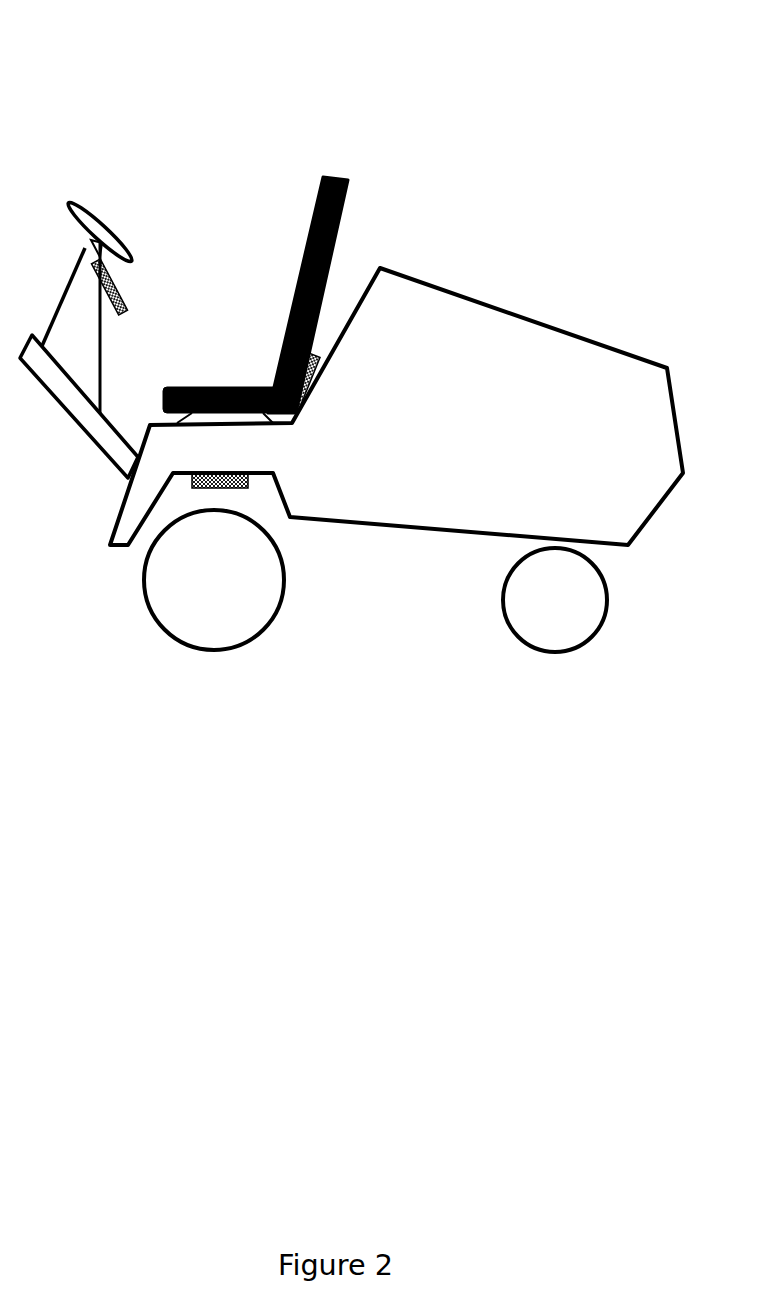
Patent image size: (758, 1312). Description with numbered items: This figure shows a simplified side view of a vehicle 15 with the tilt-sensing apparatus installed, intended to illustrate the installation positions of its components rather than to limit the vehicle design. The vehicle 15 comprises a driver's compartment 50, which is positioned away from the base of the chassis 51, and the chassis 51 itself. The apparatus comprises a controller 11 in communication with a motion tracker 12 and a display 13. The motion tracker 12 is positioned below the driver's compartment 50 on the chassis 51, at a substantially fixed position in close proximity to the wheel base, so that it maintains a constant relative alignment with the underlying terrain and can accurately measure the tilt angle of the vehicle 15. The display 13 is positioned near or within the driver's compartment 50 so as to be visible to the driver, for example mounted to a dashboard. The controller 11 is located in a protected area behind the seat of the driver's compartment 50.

The driver's compartment 50 is at (131, 78).
The chassis 51 is at (420, 622).
The vehicle 15 is at (505, 313).
The controller 11 is at (318, 360).
The motion tracker 12 is at (250, 486).
The display 13 is at (124, 297).